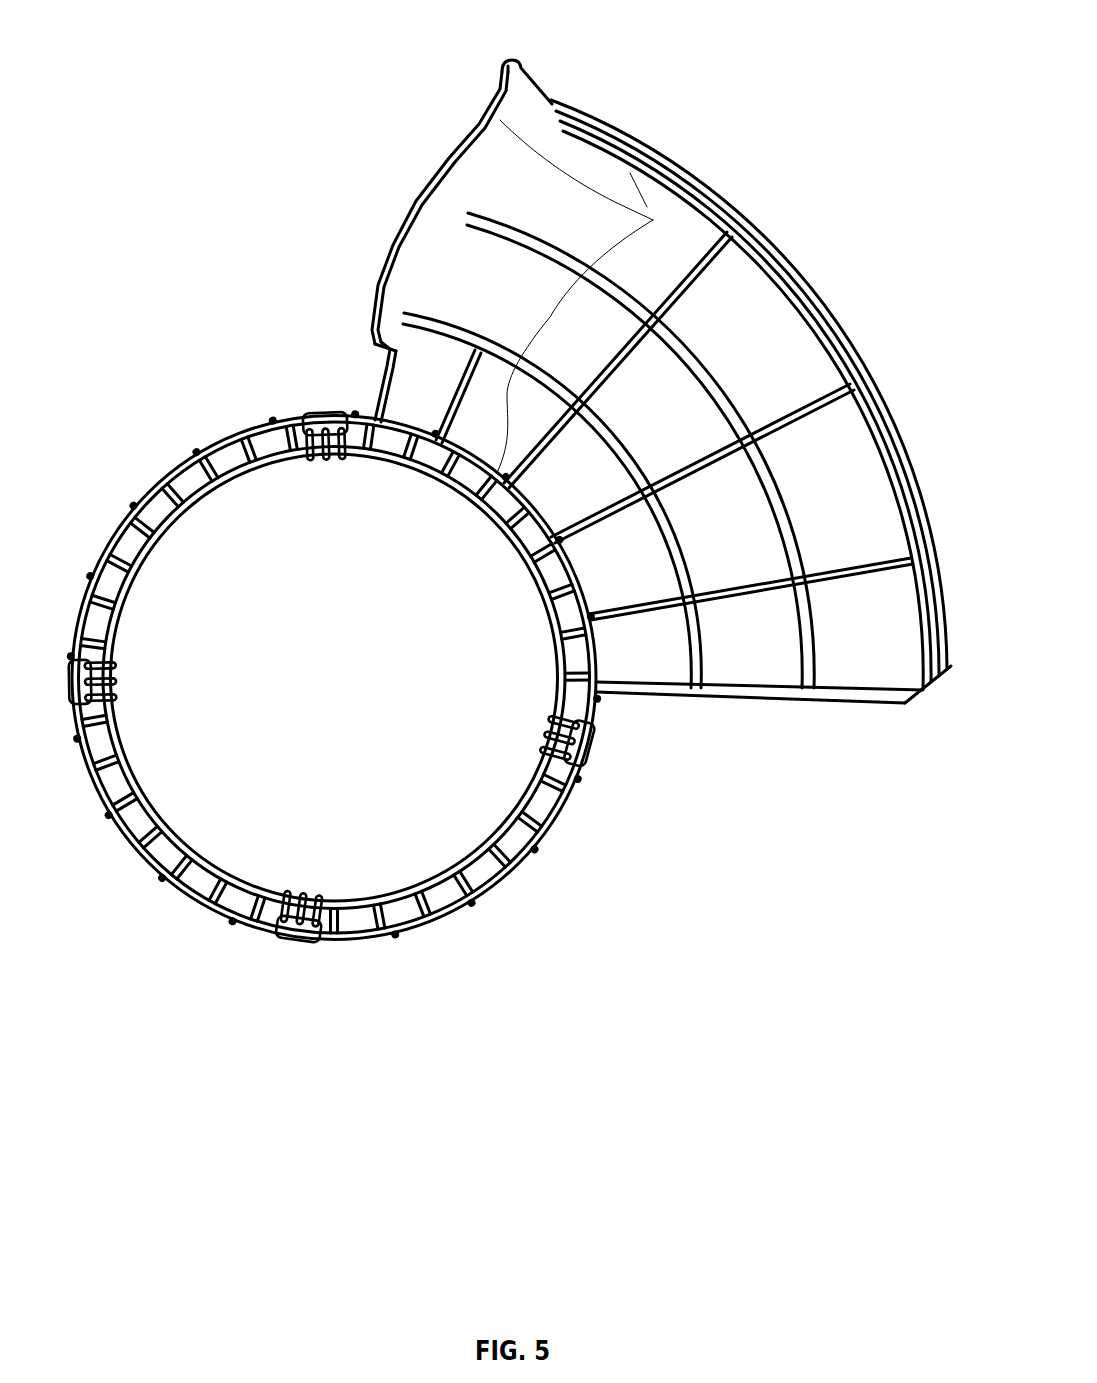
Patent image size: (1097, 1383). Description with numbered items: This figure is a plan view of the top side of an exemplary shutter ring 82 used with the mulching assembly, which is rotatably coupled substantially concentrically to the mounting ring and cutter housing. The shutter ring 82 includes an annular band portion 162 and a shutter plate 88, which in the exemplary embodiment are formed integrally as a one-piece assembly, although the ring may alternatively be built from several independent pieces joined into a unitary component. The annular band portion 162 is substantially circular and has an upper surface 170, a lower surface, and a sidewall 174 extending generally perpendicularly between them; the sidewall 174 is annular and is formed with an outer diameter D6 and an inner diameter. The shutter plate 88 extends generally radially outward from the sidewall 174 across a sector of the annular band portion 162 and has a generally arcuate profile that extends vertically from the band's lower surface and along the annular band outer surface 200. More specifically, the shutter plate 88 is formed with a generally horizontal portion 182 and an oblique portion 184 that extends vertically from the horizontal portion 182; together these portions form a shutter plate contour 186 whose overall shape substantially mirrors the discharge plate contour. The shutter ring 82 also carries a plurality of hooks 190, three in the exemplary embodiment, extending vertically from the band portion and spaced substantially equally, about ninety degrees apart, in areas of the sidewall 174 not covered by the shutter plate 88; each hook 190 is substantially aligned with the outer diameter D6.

The shutter ring 82 is at (750, 70).
The shutter plate 88 is at (747, 357).
The annular band portion 162 is at (86, 812).
The upper surface 170 is at (562, 778).
The sidewall 174 is at (488, 870).
The horizontal portion 182 is at (754, 575).
The oblique portion 184 is at (505, 292).
The shutter plate contour 186 is at (797, 372).
The hooks 190 is at (327, 453).
The annular band outer surface 200 is at (227, 924).
The outer diameter D6 is at (148, 471).